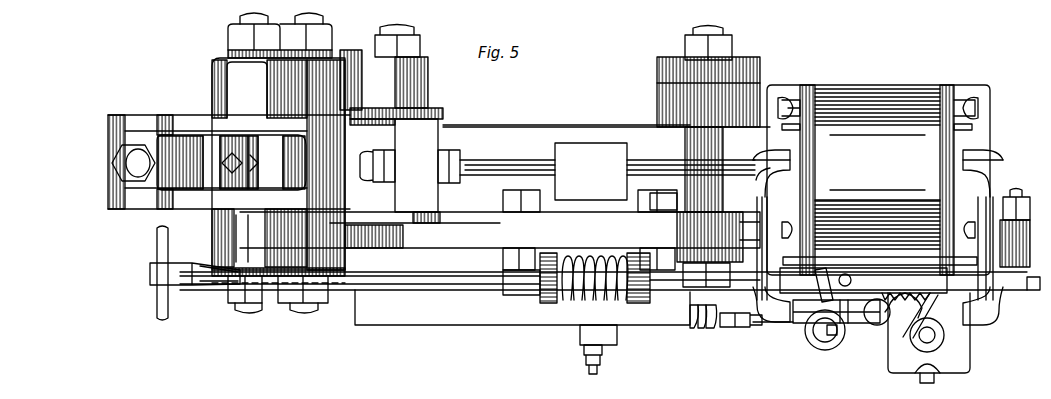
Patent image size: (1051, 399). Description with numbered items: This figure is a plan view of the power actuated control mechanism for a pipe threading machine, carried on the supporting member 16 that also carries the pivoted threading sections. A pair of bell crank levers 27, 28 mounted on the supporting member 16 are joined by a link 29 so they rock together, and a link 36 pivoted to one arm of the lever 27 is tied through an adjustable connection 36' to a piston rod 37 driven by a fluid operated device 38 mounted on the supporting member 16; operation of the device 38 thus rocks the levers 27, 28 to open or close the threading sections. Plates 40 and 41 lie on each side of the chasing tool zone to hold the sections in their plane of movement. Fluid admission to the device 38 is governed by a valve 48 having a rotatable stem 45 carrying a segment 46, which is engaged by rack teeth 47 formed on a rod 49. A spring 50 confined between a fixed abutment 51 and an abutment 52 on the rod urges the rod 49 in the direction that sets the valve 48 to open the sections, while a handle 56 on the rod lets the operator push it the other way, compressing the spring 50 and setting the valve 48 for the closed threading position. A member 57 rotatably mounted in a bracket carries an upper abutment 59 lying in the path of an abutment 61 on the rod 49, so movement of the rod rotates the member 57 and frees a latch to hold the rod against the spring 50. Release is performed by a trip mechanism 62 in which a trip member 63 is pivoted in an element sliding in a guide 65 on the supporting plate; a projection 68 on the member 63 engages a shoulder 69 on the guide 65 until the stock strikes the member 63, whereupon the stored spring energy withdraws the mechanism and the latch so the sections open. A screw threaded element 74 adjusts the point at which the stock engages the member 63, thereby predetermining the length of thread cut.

The supporting member 16 is at (478, 237).
The bell crank lever 27 is at (186, 125).
The bell crank lever 28 is at (108, 128).
The link 29 is at (118, 170).
The link 36 is at (555, 119).
The adjustable connection 36' is at (416, 155).
The piston rod 37 is at (502, 163).
The fluid operated device 38 is at (845, 90).
The plate 40 is at (660, 105).
The plate 41 is at (245, 88).
The rotatable stem 45 is at (936, 338).
The segment 46 is at (932, 318).
The rack teeth 47 is at (905, 293).
The valve 48 is at (893, 368).
The rod 49 is at (432, 290).
The spring 50 is at (598, 300).
The fixed abutment 51 is at (515, 295).
The abutment 52 is at (652, 302).
The handle 56 is at (158, 258).
The rotatable member 57 is at (820, 342).
The abutment 59 is at (816, 278).
The abutment 61 is at (851, 280).
The trip mechanism 62 is at (745, 327).
The trip member 63 is at (614, 338).
The guide 65 is at (690, 328).
The projection 68 is at (704, 328).
The shoulder 69 is at (714, 328).
The screw threaded element 74 is at (584, 360).